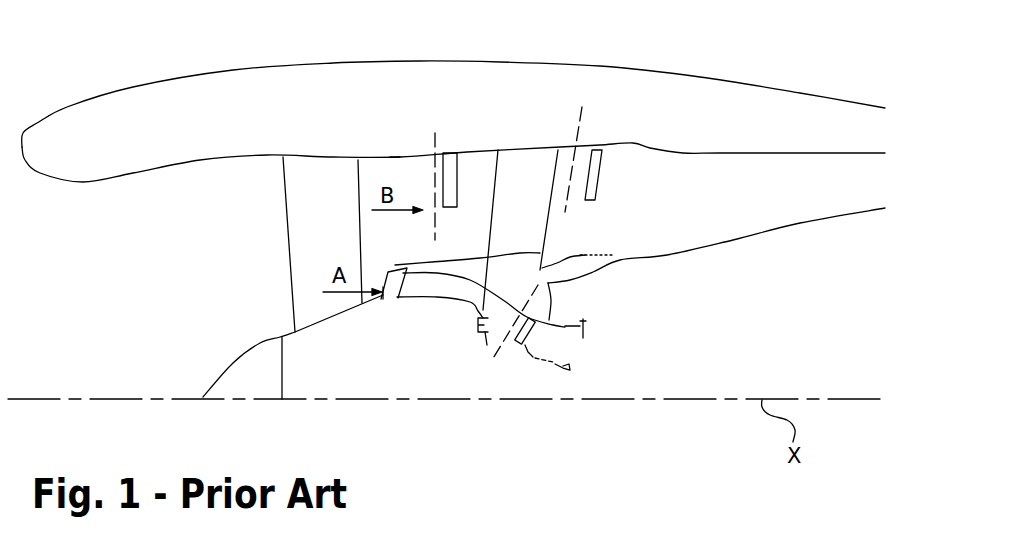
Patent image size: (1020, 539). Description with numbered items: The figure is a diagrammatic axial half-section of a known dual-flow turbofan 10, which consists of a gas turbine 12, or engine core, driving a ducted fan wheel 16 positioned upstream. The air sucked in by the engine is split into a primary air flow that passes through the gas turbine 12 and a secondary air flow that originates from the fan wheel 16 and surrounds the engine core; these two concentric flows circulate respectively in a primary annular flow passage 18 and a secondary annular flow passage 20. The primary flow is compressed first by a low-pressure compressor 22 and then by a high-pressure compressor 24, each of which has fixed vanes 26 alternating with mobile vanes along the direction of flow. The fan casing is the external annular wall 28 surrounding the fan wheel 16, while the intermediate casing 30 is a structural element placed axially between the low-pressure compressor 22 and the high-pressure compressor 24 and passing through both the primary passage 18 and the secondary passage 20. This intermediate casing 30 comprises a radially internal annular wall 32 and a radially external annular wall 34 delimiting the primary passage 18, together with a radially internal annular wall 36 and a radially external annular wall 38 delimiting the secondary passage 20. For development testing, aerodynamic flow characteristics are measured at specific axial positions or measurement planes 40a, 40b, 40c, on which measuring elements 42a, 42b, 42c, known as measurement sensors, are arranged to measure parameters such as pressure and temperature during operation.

The dual-flow turbofan 10 is at (161, 57).
The gas turbine 12 is at (838, 320).
The ducted fan wheel 16 is at (253, 247).
The primary annular flow passage 18 is at (560, 338).
The secondary annular flow passage 20 is at (716, 249).
The low-pressure compressor 22 is at (428, 292).
The high-pressure compressor 24 is at (580, 358).
The fixed vanes 26 is at (388, 300).
The fan casing 28 is at (395, 157).
The intermediate casing 30 is at (486, 174).
The radially internal annular wall of primary passage 32 is at (480, 312).
The radially external annular wall of primary passage 34 is at (495, 332).
The radially internal annular wall of secondary passage 36 is at (523, 263).
The radially external annular wall of secondary passage 38 is at (537, 147).
The measurement plane 40a is at (433, 140).
The measurement plane 40b is at (582, 127).
The measurement plane 40c is at (493, 362).
The measuring element 42a is at (450, 153).
The measuring element 42b is at (602, 170).
The measuring element 42c is at (517, 348).